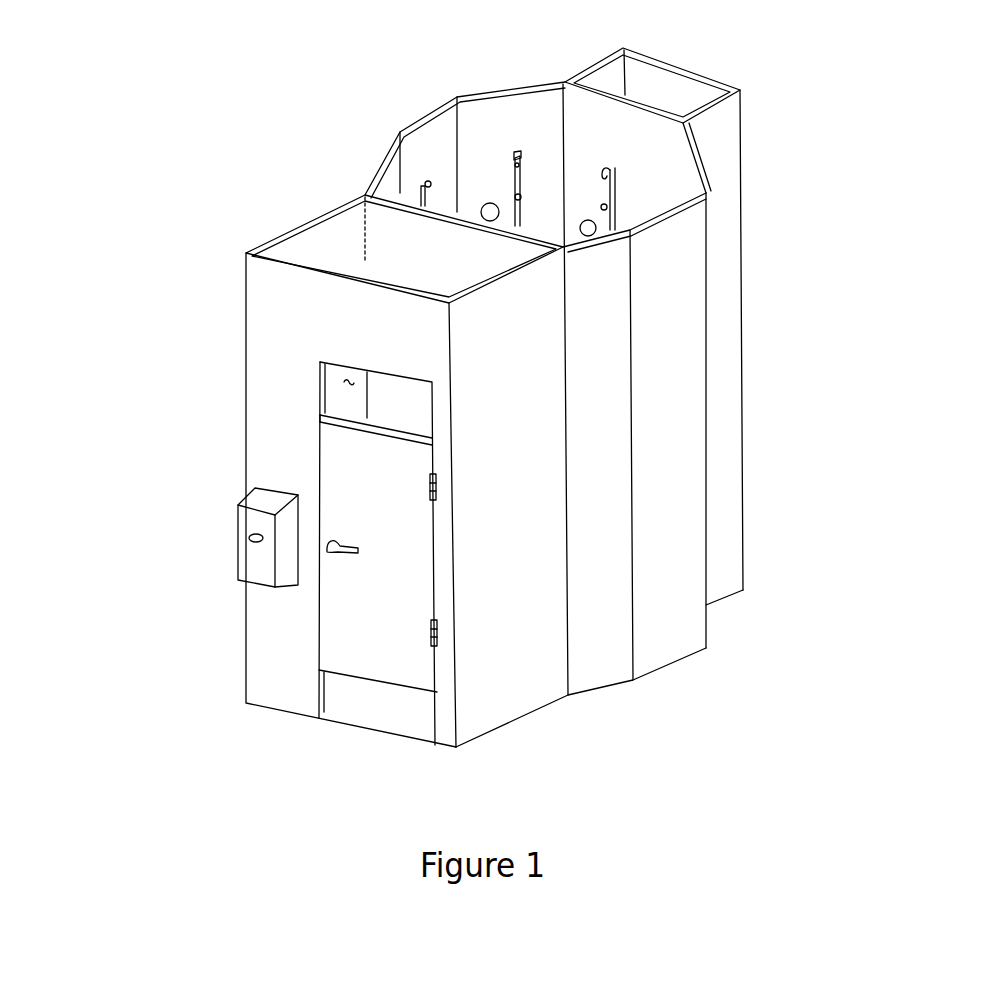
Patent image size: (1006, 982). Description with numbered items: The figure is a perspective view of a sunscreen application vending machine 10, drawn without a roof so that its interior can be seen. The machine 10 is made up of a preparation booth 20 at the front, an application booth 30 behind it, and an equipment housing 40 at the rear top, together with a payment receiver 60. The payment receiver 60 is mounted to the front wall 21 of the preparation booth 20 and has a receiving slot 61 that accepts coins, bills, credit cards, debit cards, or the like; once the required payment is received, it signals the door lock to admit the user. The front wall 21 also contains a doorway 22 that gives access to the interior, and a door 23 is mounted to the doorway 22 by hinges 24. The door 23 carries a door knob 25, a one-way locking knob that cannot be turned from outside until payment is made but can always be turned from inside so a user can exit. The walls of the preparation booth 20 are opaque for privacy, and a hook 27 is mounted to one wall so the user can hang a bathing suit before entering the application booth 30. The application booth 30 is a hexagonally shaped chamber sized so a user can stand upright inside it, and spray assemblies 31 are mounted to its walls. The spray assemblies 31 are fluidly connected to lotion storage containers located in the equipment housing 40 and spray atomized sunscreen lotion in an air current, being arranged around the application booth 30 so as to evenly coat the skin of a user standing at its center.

The sunscreen application vending machine 10 is at (898, 263).
The preparation booth 20 is at (283, 238).
The front wall 21 is at (268, 354).
The doorway 22 is at (340, 362).
The door 23 is at (367, 667).
The hinges 24 is at (435, 475).
The door knob 25 is at (348, 553).
The hook 27 is at (345, 382).
The application booth 30 is at (417, 110).
The spray assemblies 31 is at (424, 183).
The equipment housing 40 is at (594, 65).
The payment receiver 60 is at (247, 563).
The receiving slot 61 is at (249, 536).